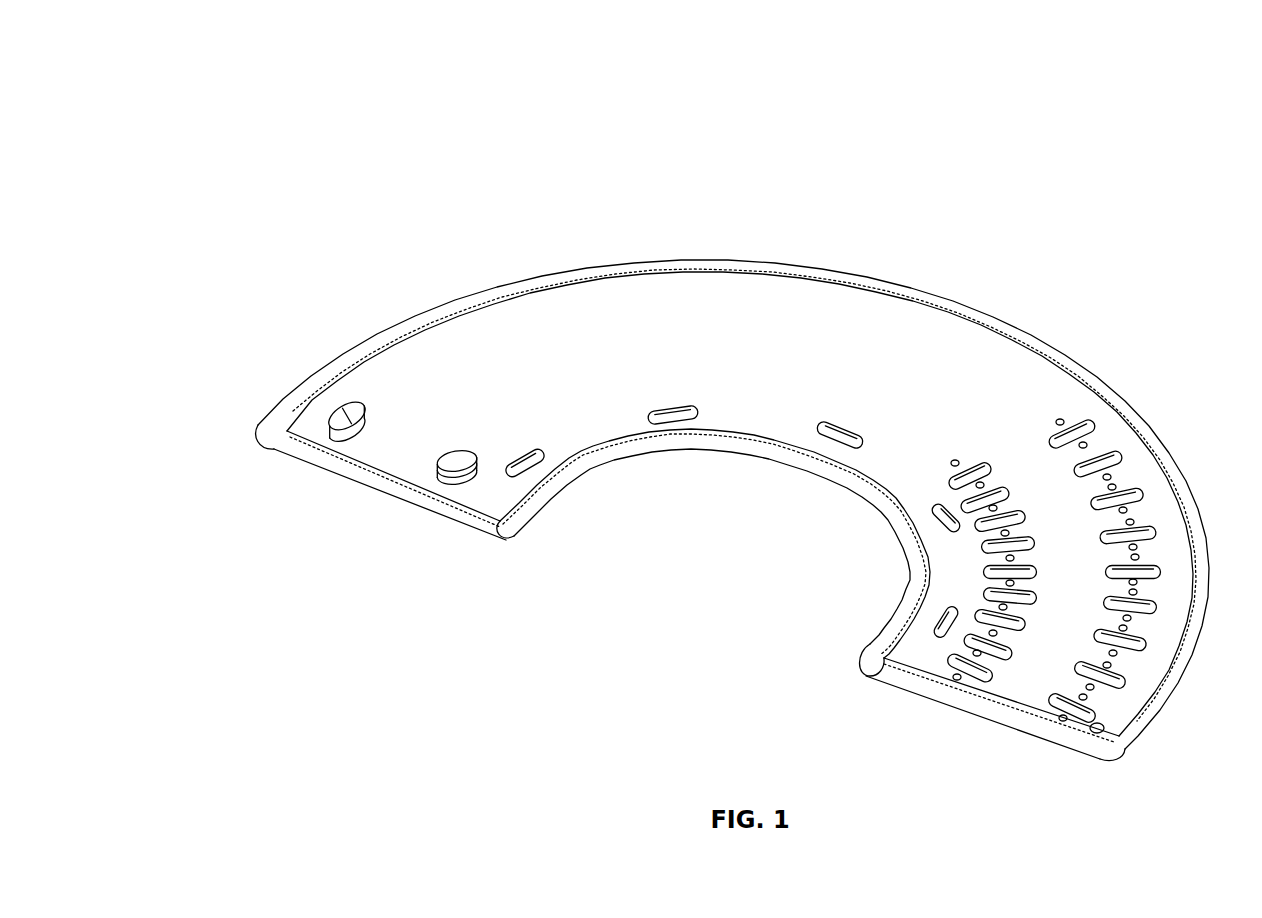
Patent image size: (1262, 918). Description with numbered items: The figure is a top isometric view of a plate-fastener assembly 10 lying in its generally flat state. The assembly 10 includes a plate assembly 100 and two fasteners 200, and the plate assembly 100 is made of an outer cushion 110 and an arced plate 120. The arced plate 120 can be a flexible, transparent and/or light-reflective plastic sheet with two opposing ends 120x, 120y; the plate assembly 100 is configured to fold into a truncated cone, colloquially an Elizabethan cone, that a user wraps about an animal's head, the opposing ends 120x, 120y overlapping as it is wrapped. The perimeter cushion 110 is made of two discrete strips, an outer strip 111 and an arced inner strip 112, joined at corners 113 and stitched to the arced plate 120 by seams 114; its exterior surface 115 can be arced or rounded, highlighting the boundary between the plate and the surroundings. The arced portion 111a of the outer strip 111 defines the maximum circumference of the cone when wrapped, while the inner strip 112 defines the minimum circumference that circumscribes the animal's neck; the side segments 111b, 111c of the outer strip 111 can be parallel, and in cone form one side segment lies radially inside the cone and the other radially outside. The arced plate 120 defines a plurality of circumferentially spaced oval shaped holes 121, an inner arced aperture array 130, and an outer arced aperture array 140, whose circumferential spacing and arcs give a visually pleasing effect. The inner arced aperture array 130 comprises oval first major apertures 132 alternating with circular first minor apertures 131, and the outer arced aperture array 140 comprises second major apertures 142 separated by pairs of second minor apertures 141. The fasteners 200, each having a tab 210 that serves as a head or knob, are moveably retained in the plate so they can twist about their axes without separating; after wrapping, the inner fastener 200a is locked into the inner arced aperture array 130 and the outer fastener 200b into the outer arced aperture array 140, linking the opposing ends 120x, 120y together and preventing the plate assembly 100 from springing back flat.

The plate-fastener assembly 10 is at (270, 100).
The plate assembly 100 is at (563, 160).
The outer cushion 110 is at (538, 270).
The outer strip 111 is at (586, 264).
The arced portion of outer strip 111a is at (489, 312).
The side segment 111b is at (287, 447).
The side segment 111c is at (943, 693).
The inner strip 112 is at (565, 485).
The corners 113 is at (509, 548).
The seams 114 is at (360, 467).
The exterior surface 115 is at (455, 505).
The arced plate 120 is at (752, 316).
The opposing end 120x is at (308, 428).
The opposing end 120y is at (912, 643).
The oval shaped holes 121 is at (528, 452).
The inner arced aperture array 130 is at (967, 444).
The first minor apertures 131 is at (962, 620).
The first major apertures 132 is at (962, 680).
The outer arced aperture array 140 is at (1052, 405).
The second minor apertures 141 is at (1085, 740).
The second major apertures 142 is at (1112, 735).
The fastener 200 is at (391, 441).
The inner fastener 200a is at (410, 450).
The outer fastener 200b is at (372, 420).
The tab 210 is at (343, 408).